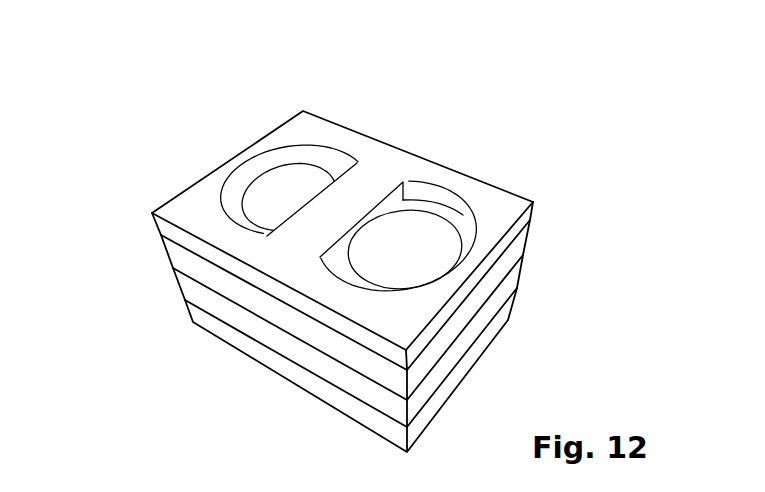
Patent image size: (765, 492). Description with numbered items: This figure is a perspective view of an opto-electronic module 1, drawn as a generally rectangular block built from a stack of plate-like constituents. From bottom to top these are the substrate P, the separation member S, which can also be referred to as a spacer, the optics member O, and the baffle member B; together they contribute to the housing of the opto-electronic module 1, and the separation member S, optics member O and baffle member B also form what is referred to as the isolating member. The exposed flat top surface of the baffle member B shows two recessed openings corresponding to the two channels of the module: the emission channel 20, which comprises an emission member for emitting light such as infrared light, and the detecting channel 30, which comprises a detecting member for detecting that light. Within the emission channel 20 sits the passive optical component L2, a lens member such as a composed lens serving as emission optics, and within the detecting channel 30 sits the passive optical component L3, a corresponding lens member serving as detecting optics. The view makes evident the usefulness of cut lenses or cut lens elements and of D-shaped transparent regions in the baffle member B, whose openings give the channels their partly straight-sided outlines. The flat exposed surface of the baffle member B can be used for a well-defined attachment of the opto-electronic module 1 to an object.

The opto-electronic module 1 is at (155, 98).
The emission channel 20 is at (300, 200).
The detecting channel 30 is at (385, 237).
The passive optical component L2 is at (278, 207).
The passive optical component L3 is at (395, 243).
The baffle member B is at (530, 220).
The optics member O is at (523, 255).
The separation member S is at (517, 288).
The substrate P is at (508, 327).